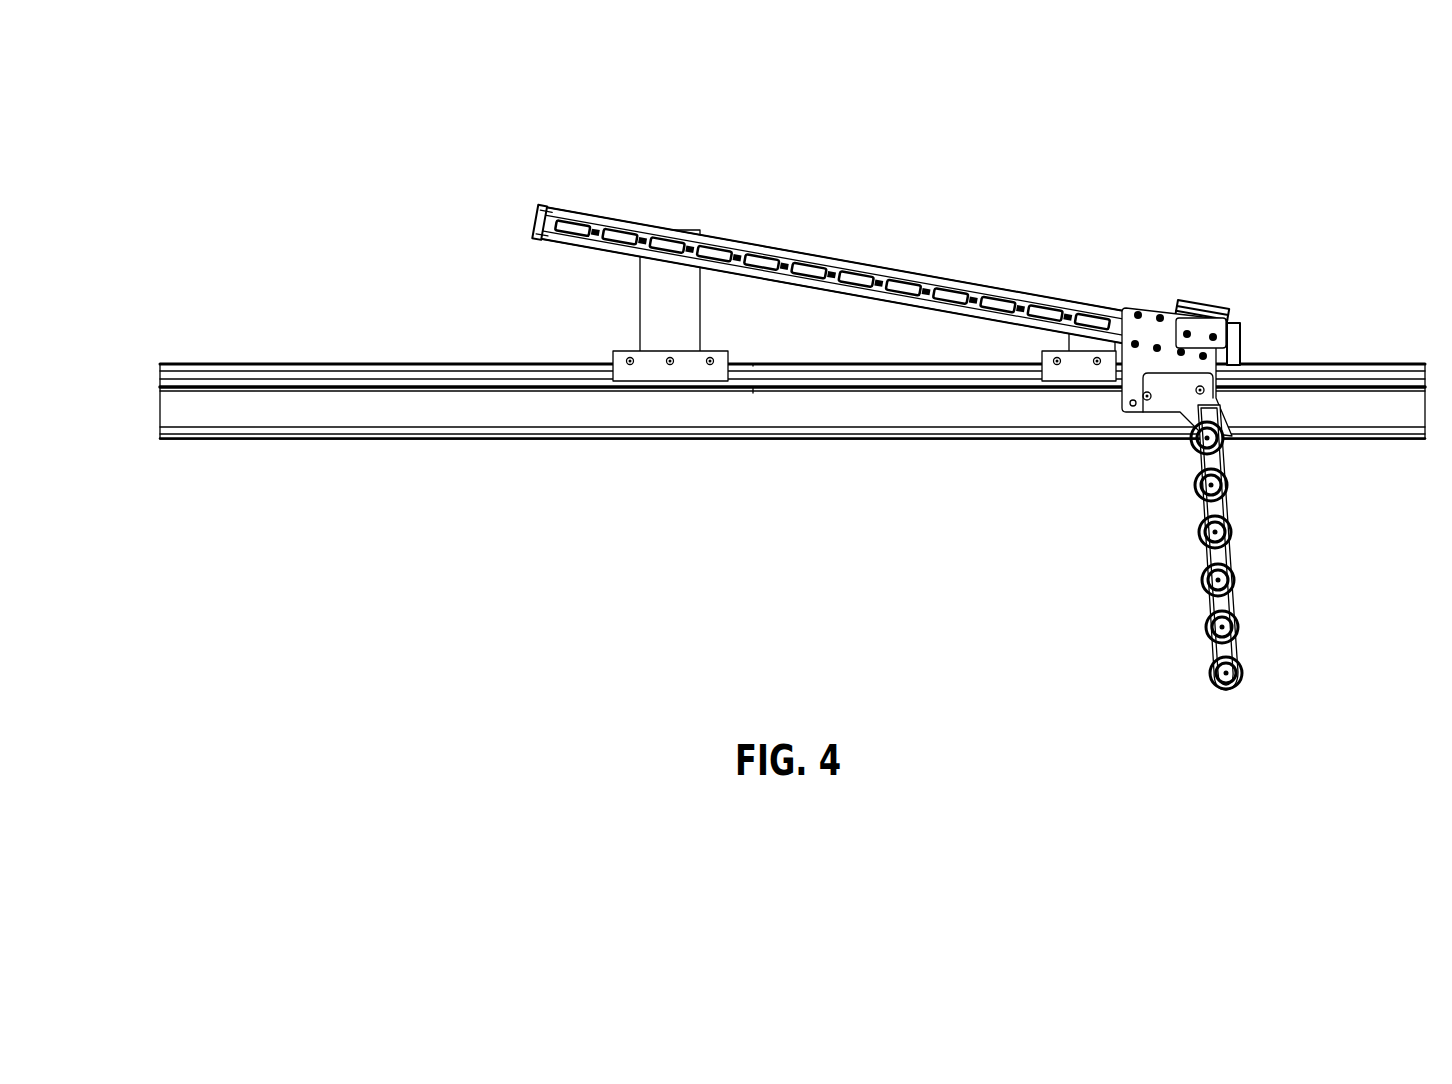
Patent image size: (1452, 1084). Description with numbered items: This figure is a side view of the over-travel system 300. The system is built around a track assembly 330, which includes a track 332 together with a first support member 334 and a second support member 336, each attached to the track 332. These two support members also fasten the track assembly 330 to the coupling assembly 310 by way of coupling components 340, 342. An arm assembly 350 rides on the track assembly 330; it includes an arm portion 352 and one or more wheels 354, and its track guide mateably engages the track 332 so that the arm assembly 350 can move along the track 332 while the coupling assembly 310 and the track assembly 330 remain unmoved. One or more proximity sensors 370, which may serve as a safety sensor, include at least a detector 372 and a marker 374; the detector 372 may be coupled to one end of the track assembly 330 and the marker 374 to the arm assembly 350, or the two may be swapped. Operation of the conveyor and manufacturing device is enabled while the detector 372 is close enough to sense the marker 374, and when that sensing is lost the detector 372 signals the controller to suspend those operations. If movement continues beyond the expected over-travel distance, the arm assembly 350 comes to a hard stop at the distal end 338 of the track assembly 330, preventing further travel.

The over-travel system 300 is at (266, 170).
The coupling assembly 310 is at (240, 485).
The track assembly 330 is at (838, 228).
The track 332 is at (572, 205).
The first support member 334 is at (640, 310).
The second support member 336 is at (1068, 343).
The distal end 338 is at (512, 215).
The coupling component 340 is at (612, 358).
The coupling component 342 is at (1042, 372).
The arm assembly 350 is at (1065, 497).
The arm portion 352 is at (1205, 455).
The wheels 354 is at (1230, 445).
The proximity sensors 370 is at (1207, 296).
The detector 372 is at (1240, 305).
The marker 374 is at (1243, 345).